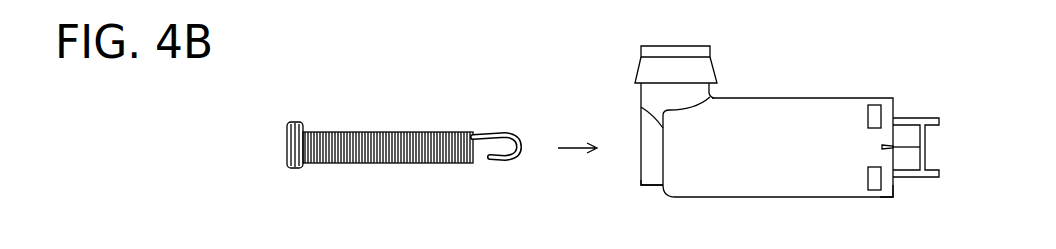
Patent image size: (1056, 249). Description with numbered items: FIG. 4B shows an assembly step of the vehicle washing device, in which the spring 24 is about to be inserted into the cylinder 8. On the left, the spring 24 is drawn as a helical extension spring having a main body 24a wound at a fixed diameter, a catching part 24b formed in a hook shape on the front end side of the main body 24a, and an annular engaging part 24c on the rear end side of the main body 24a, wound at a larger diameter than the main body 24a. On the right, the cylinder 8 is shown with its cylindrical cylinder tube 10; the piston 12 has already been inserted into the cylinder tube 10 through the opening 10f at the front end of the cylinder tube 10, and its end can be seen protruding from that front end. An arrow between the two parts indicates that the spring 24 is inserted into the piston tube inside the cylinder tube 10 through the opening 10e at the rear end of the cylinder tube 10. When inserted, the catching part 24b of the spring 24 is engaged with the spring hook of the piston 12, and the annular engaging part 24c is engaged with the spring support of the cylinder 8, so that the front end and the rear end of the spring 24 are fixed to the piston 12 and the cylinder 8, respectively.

The spring 24 is at (400, 137).
The main body 24a is at (415, 167).
The catching part 24b is at (500, 133).
The annular engaging part 24c is at (297, 170).
The cylinder 8 is at (767, 129).
The cylinder tube 10 is at (835, 100).
The opening 10e is at (640, 183).
The opening 10f is at (897, 193).
The piston 12 is at (905, 122).